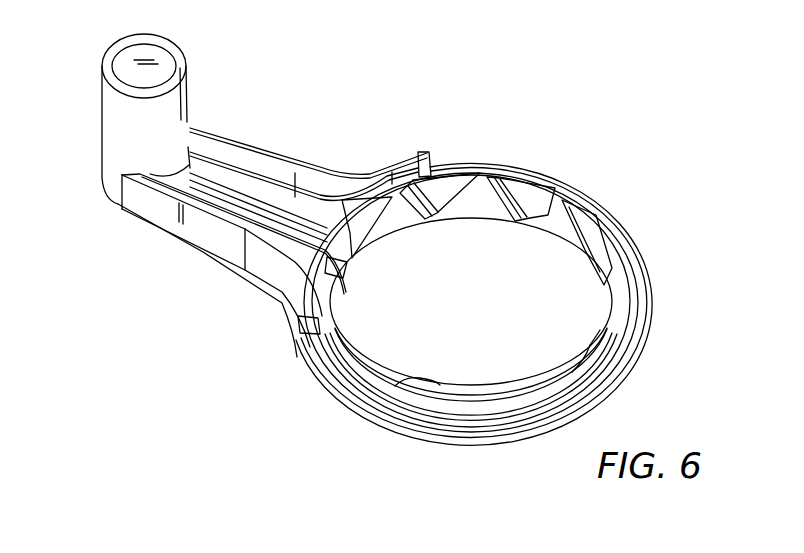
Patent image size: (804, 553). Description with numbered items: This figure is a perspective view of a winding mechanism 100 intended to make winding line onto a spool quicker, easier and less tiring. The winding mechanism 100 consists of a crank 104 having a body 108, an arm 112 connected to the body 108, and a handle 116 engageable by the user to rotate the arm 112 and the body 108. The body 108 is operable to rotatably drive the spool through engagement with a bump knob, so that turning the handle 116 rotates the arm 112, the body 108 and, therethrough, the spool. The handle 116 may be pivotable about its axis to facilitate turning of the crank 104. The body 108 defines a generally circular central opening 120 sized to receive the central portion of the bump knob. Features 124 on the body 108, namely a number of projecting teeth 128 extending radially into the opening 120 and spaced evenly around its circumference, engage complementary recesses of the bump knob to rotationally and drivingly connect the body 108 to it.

The winding mechanism 100 is at (604, 64).
The crank 104 is at (451, 115).
The body 108 is at (640, 275).
The arm 112 is at (217, 235).
The handle 116 is at (186, 78).
The central opening 120 is at (468, 216).
The features 124 is at (595, 183).
The projecting teeth 128 is at (498, 218).